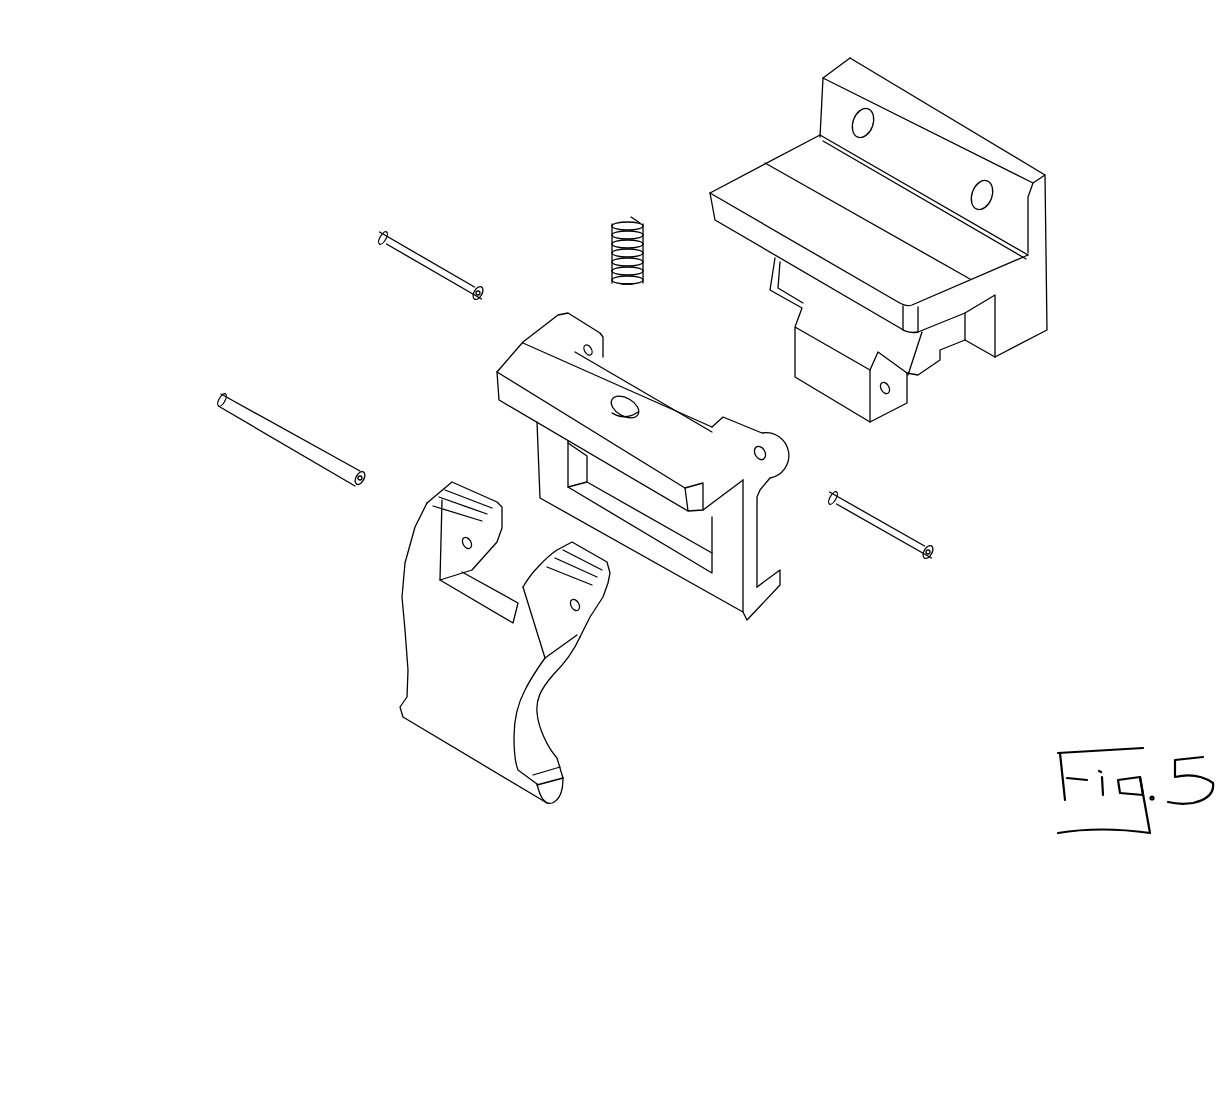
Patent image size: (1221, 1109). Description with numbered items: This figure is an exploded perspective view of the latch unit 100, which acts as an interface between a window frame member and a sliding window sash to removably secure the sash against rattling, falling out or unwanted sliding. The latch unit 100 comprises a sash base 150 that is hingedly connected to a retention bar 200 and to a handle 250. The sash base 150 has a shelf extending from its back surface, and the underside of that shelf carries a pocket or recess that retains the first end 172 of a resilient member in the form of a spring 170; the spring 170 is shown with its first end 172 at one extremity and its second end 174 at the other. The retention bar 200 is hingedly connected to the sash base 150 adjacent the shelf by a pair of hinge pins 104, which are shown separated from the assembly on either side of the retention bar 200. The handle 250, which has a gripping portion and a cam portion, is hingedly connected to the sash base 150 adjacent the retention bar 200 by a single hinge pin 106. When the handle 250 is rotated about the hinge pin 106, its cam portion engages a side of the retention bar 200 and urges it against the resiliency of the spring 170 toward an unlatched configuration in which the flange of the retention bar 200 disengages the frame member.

The latch unit 100 is at (707, 914).
The hinge pins 104 is at (380, 222).
The hinge pin 106 is at (215, 392).
The sash base 150 is at (943, 108).
The spring 170 is at (623, 213).
The first end of spring 172 is at (634, 216).
The second end of spring 174 is at (627, 288).
The retention bar 200 is at (763, 607).
The handle 250 is at (577, 633).